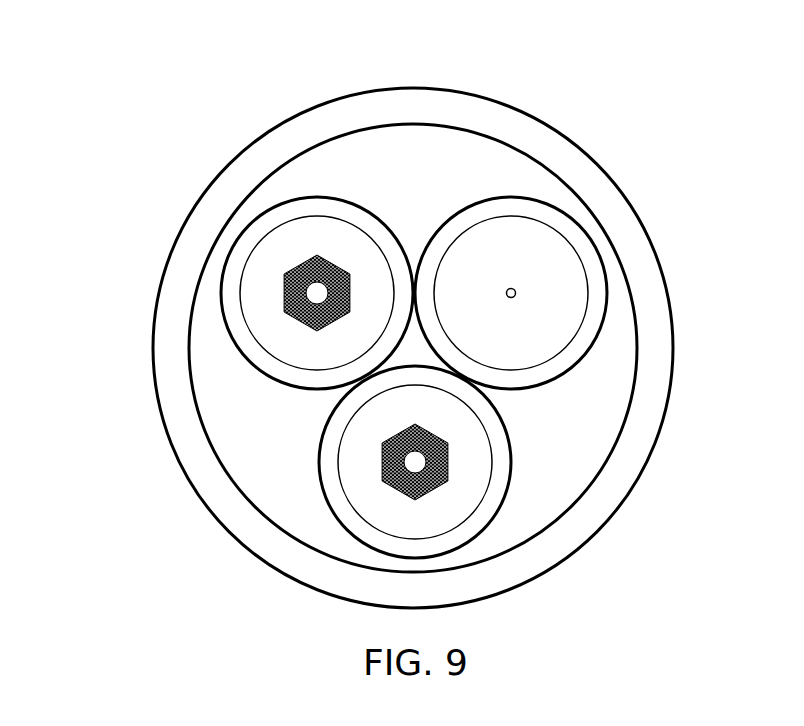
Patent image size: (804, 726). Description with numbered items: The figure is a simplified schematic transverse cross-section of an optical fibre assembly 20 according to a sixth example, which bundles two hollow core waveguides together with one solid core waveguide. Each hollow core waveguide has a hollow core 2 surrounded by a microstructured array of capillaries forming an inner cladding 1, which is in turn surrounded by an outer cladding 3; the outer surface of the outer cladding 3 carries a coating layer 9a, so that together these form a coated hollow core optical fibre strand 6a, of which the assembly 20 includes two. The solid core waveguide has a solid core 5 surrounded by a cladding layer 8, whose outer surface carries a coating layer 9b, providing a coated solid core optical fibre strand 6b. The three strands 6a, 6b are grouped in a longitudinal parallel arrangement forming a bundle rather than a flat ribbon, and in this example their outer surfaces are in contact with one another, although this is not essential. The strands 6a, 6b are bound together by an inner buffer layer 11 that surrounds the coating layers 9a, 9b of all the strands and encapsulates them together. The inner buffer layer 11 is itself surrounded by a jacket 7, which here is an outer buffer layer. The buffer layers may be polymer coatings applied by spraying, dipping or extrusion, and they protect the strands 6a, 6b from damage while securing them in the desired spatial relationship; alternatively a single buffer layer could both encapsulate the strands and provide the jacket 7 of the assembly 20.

The optical fibre assembly 20 is at (401, 324).
The jacket 7 is at (558, 552).
The inner buffer layer 11 is at (575, 482).
The coated hollow core optical fibre strand 6a is at (290, 348).
The coated solid core optical fibre strand 6b is at (574, 270).
The coating layer 9a is at (247, 348).
The coating layer 9b is at (558, 370).
The outer cladding 3 is at (253, 297).
The cladding layer 8 is at (558, 320).
The hollow core 2 is at (283, 285).
The inner cladding 1 is at (318, 293).
The solid core 5 is at (516, 292).